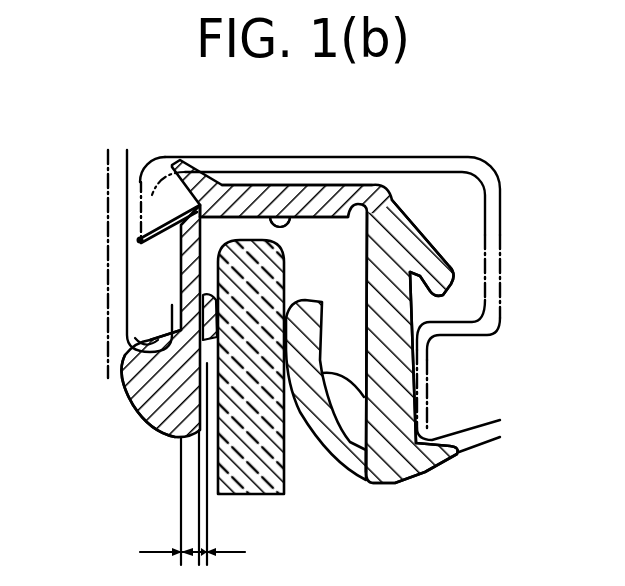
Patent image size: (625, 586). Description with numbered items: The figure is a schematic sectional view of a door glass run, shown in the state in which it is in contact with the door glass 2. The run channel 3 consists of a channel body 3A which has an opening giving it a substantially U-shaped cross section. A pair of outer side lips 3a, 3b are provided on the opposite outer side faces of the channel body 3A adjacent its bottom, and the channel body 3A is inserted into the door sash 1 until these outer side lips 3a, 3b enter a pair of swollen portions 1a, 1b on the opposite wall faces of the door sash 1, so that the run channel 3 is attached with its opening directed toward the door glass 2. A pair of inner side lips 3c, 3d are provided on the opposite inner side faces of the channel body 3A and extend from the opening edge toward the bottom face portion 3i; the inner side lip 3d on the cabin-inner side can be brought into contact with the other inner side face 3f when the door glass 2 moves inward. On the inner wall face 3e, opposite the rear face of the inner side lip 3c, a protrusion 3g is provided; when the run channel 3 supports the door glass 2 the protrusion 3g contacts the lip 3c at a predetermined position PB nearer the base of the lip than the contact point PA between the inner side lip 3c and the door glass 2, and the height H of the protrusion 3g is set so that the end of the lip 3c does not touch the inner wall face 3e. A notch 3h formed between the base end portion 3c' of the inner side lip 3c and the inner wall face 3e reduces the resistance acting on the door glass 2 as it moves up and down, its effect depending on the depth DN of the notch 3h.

The door sash 1 is at (503, 207).
The swollen portion 1a is at (143, 180).
The swollen portion 1b is at (504, 300).
The door glass 2 is at (287, 475).
The run channel 3 is at (162, 463).
The channel body 3A is at (385, 240).
The outer side lip 3a is at (137, 235).
The outer side lip 3b is at (417, 255).
The inner side lip 3c is at (128, 300).
The base end portion 3c' is at (228, 391).
The inner side lip 3d is at (372, 480).
The inner wall face 3e is at (181, 262).
The inner side face 3f is at (367, 313).
The protrusion 3g is at (145, 365).
The notch 3h is at (197, 303).
The bottom face portion 3i is at (291, 213).
The contact point PA is at (218, 312).
The predetermined position PB is at (125, 385).
The depth of the notch DN is at (162, 497).
The height of the protrusion H is at (223, 464).